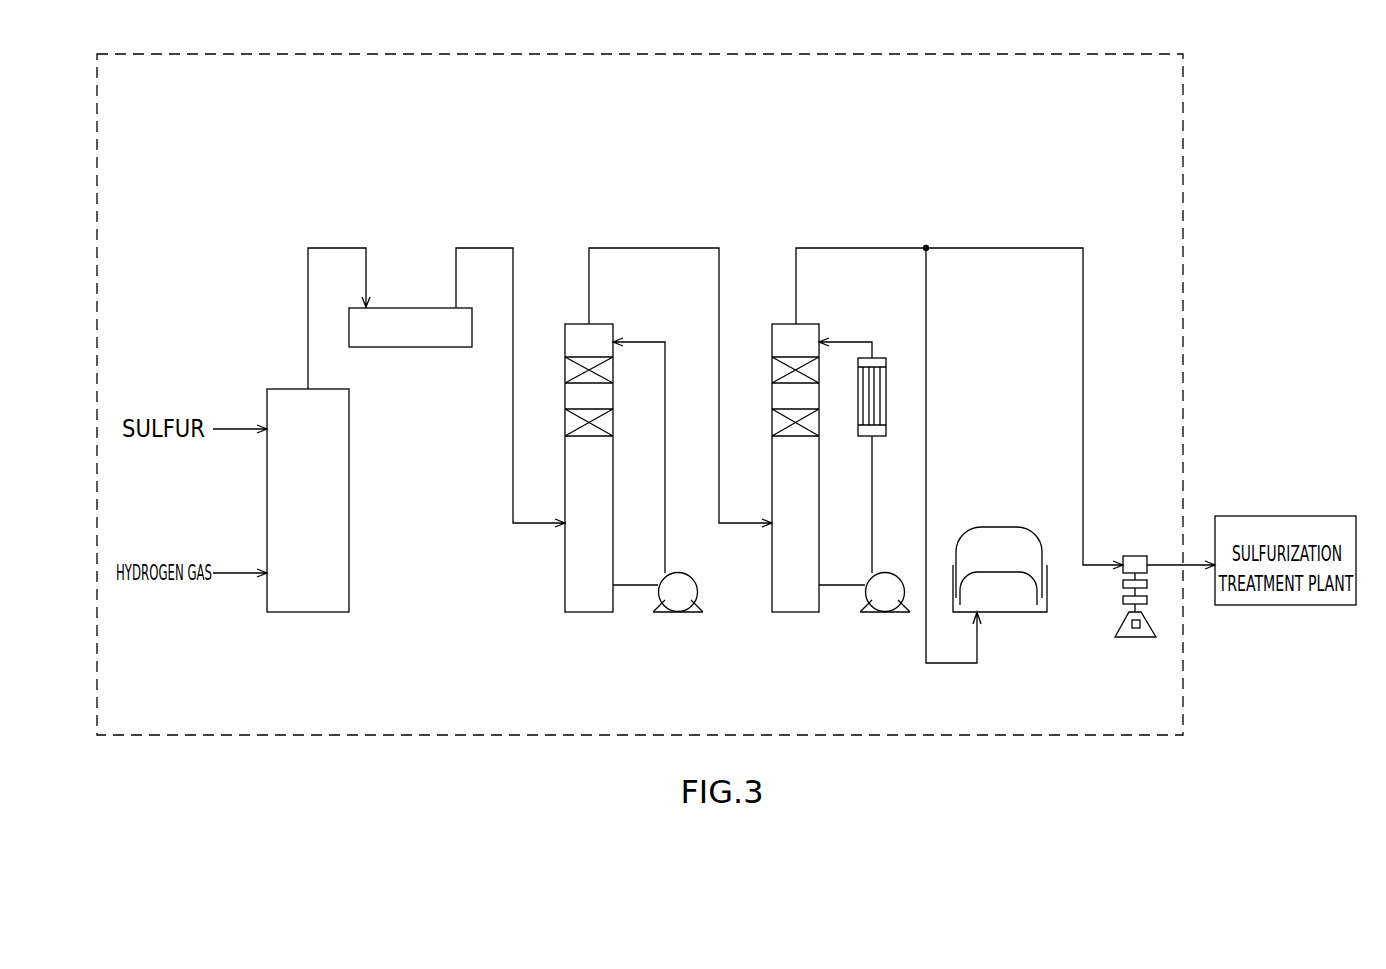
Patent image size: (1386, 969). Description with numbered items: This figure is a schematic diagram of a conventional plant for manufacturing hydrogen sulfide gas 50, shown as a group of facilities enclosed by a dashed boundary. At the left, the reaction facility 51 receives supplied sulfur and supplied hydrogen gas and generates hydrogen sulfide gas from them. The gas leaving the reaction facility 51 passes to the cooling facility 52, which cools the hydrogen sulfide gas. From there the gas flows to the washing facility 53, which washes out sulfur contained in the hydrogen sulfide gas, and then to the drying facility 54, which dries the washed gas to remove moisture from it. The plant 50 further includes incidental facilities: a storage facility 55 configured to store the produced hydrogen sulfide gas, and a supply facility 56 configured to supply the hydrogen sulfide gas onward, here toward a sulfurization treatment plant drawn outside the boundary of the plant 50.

The plant for manufacturing hydrogen sulfide gas 50 is at (665, 108).
The reaction facility 51 is at (349, 553).
The cooling facility 52 is at (413, 307).
The washing facility 53 is at (641, 627).
The drying facility 54 is at (848, 627).
The storage facility 55 is at (999, 527).
The supply facility 56 is at (1136, 556).